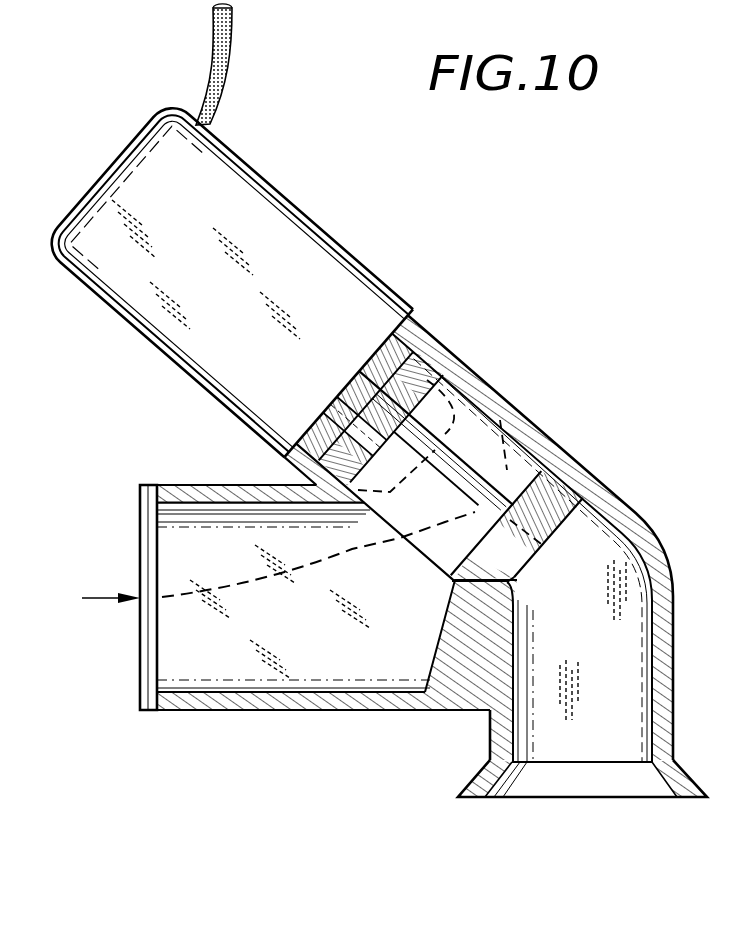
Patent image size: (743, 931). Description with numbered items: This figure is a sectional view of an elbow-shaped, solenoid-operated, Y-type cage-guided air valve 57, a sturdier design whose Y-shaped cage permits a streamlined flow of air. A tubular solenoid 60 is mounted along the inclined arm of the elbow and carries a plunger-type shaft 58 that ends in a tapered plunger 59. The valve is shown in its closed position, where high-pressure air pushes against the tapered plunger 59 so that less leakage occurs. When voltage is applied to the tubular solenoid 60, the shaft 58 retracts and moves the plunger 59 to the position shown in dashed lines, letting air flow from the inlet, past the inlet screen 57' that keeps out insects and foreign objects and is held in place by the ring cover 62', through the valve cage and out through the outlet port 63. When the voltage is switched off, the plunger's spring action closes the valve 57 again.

The Y-type cage-guided air valve 57 is at (415, 535).
The inlet screen 57' is at (323, 732).
The shaft 58 is at (483, 477).
The tapered plunger 59 is at (540, 547).
The tubular solenoid 60 is at (290, 202).
The ring cover 62' is at (263, 615).
The outlet port 63 is at (658, 796).